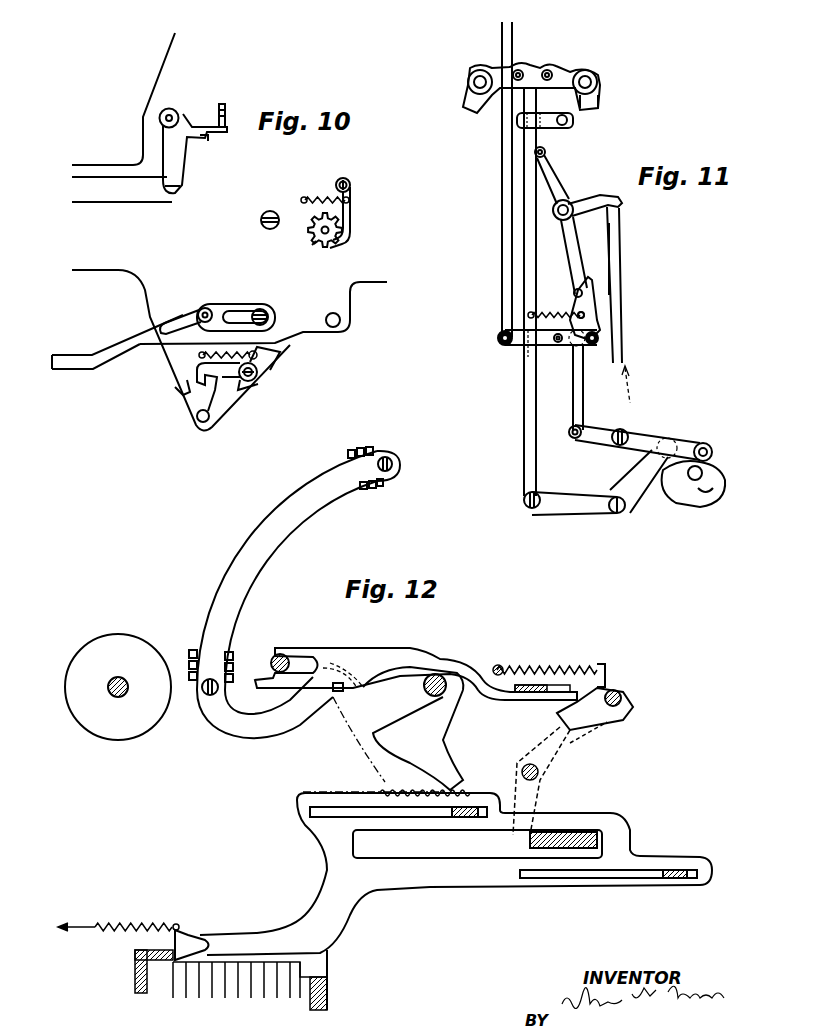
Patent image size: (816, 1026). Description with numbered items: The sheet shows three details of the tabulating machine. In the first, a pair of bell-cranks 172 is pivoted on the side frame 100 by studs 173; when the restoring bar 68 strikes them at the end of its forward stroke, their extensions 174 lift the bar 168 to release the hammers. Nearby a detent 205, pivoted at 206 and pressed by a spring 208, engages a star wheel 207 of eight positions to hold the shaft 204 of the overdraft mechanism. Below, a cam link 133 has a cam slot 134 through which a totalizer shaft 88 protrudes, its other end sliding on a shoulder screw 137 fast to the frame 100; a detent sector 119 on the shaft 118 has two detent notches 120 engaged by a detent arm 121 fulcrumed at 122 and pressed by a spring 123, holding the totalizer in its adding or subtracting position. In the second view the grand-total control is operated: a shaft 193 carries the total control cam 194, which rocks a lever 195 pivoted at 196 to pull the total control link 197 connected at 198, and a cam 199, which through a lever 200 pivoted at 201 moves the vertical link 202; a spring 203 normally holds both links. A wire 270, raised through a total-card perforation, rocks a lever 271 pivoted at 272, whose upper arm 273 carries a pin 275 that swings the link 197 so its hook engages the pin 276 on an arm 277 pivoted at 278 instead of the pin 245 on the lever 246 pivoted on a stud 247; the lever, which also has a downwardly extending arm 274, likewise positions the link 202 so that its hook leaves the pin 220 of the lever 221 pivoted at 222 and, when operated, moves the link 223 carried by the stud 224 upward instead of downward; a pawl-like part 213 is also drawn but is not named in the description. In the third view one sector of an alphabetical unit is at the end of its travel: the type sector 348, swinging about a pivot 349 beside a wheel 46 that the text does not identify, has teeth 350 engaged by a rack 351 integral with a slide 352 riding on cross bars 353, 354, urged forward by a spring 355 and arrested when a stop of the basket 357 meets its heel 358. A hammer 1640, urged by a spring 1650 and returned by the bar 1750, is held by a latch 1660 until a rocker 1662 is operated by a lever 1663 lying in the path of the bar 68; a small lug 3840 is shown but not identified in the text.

In FIG. 10, the studs 173 is at (159, 112).
In FIG. 10, the bar 168 is at (214, 120).
In FIG. 10, the extensions 174 is at (205, 141).
In FIG. 10, the bell-cranks 172 is at (182, 183).
In FIG. 10, the spring 208 is at (323, 200).
In FIG. 10, the pivot 206 is at (350, 185).
In FIG. 10, the detent 205 is at (351, 222).
In FIG. 10, the shaft 204 is at (340, 244).
In FIG. 10, the star wheel 207 is at (312, 246).
In FIG. 10, the cam slots 134 is at (197, 304).
In FIG. 10, the shafts 88 is at (218, 309).
In FIG. 10, the shoulder screws 137 is at (268, 317).
In FIG. 10, the side frame 100 is at (355, 308).
In FIG. 10, the cam links 133 is at (95, 370).
In FIG. 10, the detent notches 120 is at (185, 380).
In FIG. 10, the spring 123 is at (282, 357).
In FIG. 10, the fulcrum 122 is at (259, 375).
In FIG. 10, the detent arm 121 is at (252, 390).
In FIG. 10, the detent sectors 119 is at (213, 390).
In FIG. 10, the shaft 118 is at (197, 418).
In FIG. 11, the pivot 278 is at (480, 70).
In FIG. 11, the pin 276 is at (522, 70).
In FIG. 11, the pin 245 is at (550, 69).
In FIG. 11, the lever 246 is at (568, 74).
In FIG. 11, the stud 247 is at (598, 82).
In FIG. 11, the arm 277 is at (468, 98).
In FIG. 11, the pin 275 is at (546, 151).
In FIG. 11, the upwardly extending arm 273 is at (557, 168).
In FIG. 11, the pivot 272 is at (567, 200).
In FIG. 11, the lever 271 is at (582, 200).
In FIG. 11, the downwardly extending arm 274 is at (572, 249).
In FIG. 11, the link 223 is at (502, 251).
In FIG. 11, the wire 270 is at (624, 271).
In FIG. 11, the spring 203 is at (566, 312).
In FIG. 11, the pawl 213 is at (594, 336).
In FIG. 11, the stud 224 is at (498, 338).
In FIG. 11, the lever 221 is at (513, 348).
In FIG. 11, the pin 220 is at (556, 346).
In FIG. 11, the pivot 222 is at (595, 346).
In FIG. 11, the total control link 197 is at (524, 395).
In FIG. 11, the link 202 is at (584, 389).
In FIG. 11, the lever 200 is at (640, 433).
In FIG. 11, the pivot 201 is at (580, 440).
In FIG. 11, the shaft 193 is at (712, 453).
In FIG. 11, the total control cam 194 is at (726, 476).
In FIG. 11, the cam 199 is at (709, 491).
In FIG. 11, the connection 198 is at (524, 503).
In FIG. 11, the lever 195 is at (640, 500).
In FIG. 11, the pivot 196 is at (612, 514).
In FIG. 12, the wheel 46 is at (140, 733).
In FIG. 12, the type sectors 348 is at (258, 742).
In FIG. 12, the hammers 1640 is at (365, 658).
In FIG. 12, the bar 1750 is at (533, 684).
In FIG. 12, the springs 1650 is at (560, 668).
In FIG. 12, the latch 1660 is at (622, 698).
In FIG. 12, the lug 3840 is at (343, 692).
In FIG. 12, the pivot 349 is at (440, 697).
In FIG. 12, the rocker 1662 is at (610, 735).
In FIG. 12, the lever 1663 is at (548, 764).
In FIG. 12, the teeth 350 is at (385, 791).
In FIG. 12, the racks 351 is at (460, 791).
In FIG. 12, the restoring bar 68 is at (572, 832).
In FIG. 12, the slides 352 is at (297, 831).
In FIG. 12, the cross bar 353 is at (458, 819).
In FIG. 12, the springs 355 is at (131, 925).
In FIG. 12, the heel 358 is at (190, 946).
In FIG. 12, the stop basket 357 is at (330, 988).
In FIG. 12, the cross bar 354 is at (665, 879).